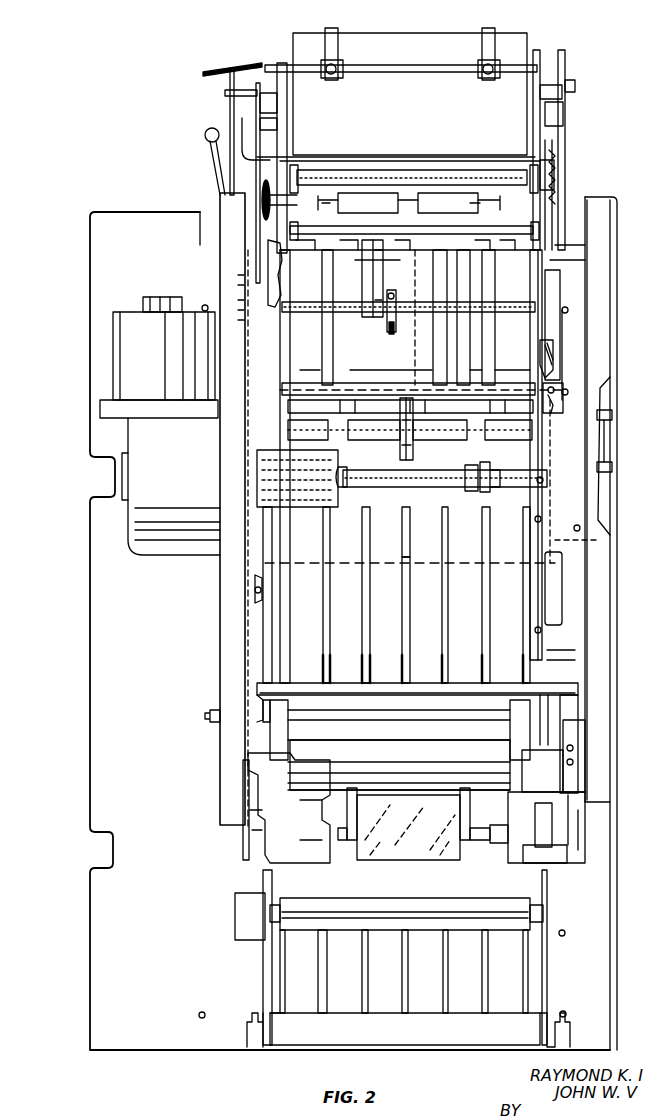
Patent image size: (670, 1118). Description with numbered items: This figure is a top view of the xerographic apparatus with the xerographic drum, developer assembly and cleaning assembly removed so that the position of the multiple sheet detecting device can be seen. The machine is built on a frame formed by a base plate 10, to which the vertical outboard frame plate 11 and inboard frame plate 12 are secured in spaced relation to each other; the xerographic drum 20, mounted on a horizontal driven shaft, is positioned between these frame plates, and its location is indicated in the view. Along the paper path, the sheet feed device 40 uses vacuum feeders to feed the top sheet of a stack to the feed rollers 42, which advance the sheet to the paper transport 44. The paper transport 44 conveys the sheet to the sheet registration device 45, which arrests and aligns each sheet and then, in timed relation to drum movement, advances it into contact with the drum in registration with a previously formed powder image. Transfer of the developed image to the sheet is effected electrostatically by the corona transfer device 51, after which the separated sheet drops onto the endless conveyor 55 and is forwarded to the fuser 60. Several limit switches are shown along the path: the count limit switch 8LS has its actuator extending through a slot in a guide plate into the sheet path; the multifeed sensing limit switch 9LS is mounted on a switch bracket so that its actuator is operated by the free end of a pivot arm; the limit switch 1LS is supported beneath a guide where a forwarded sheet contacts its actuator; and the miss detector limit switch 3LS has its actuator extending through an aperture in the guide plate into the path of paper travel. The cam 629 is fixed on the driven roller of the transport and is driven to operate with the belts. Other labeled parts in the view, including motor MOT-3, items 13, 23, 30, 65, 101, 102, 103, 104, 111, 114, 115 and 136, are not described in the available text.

The base plate 10 is at (612, 849).
The outboard frame plate 11 is at (605, 650).
The inboard frame plate 12 is at (227, 628).
The carriage block 13 is at (510, 705).
The xerographic drum 20 is at (600, 540).
The roller 23 is at (378, 856).
The plate 30 is at (266, 251).
The sheet feed device 40 is at (533, 42).
The feed rollers 42 is at (371, 192).
The paper transport 44 is at (556, 288).
The sheet registration device 45 is at (563, 396).
The corona transfer device 51 is at (516, 475).
The endless conveyor 55 is at (568, 594).
The fuser 60 is at (587, 728).
The lower shaft assembly 65 is at (566, 910).
The drive block 101 is at (500, 822).
The strip 102 is at (250, 859).
The bracket block 103 is at (248, 845).
The housing 104 is at (262, 470).
The shaft 111 is at (340, 474).
The motor housing base 114 is at (165, 545).
The coupling 115 is at (488, 488).
The stud 136 is at (258, 590).
The cam 629 is at (265, 697).
The motor MOT-3 is at (118, 350).
The limit switch 1LS is at (413, 448).
The miss detector limit switch 3LS is at (402, 513).
The count limit switch 8LS is at (395, 328).
The multifeed sensing limit switch 9LS is at (380, 254).